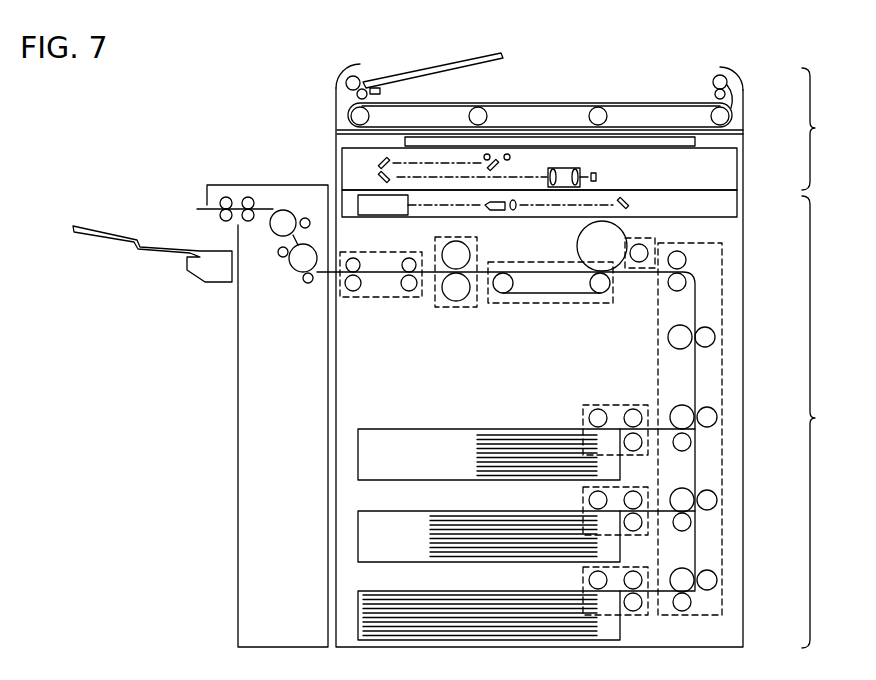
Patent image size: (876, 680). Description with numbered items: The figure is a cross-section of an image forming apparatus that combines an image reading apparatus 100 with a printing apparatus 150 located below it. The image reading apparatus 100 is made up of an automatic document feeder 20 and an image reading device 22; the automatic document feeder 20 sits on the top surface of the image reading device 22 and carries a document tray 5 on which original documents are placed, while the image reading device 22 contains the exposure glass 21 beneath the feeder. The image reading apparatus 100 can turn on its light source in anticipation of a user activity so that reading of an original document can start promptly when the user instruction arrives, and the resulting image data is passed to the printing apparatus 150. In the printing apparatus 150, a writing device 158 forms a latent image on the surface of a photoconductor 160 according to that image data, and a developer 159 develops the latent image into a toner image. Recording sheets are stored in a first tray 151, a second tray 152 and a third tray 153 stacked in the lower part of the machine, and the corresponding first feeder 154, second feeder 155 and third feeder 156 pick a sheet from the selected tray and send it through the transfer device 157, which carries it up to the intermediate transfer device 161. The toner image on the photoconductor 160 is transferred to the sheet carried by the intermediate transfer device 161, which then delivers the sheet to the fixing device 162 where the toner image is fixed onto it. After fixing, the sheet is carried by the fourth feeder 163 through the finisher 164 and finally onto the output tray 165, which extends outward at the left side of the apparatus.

The document tray 5 is at (416, 72).
The automatic document feeder 20 is at (745, 105).
The exposure glass 21 is at (695, 141).
The image reading device 22 is at (737, 172).
The writing device 158 is at (737, 205).
The image reading apparatus 100 is at (823, 129).
The printing apparatus 150 is at (823, 422).
The first tray 151 is at (358, 452).
The second tray 152 is at (358, 532).
The third tray 153 is at (358, 613).
The first feeder 154 is at (635, 457).
The second feeder 155 is at (635, 535).
The third feeder 156 is at (635, 615).
The transfer device 157 is at (722, 268).
The developer 159 is at (650, 238).
The photoconductor 160 is at (577, 248).
The intermediate transfer device 161 is at (566, 305).
The fixing device 162 is at (455, 309).
The fourth feeder 163 is at (387, 299).
The finisher 164 is at (238, 472).
The output tray 165 is at (140, 230).